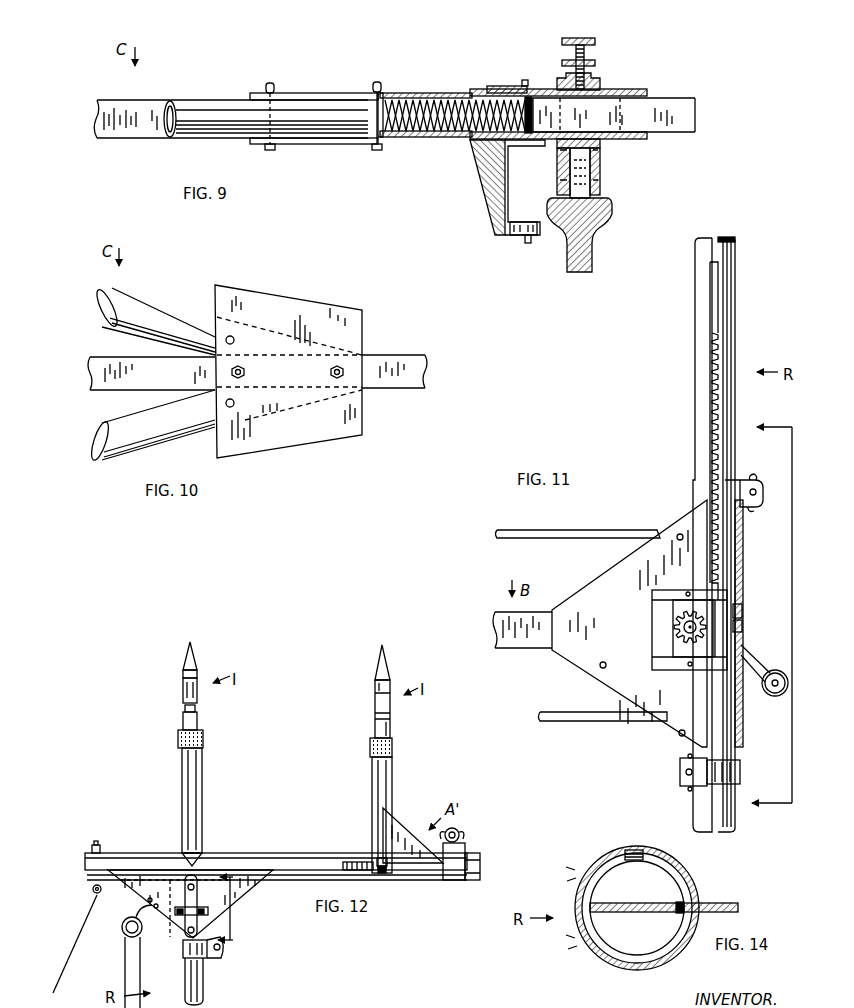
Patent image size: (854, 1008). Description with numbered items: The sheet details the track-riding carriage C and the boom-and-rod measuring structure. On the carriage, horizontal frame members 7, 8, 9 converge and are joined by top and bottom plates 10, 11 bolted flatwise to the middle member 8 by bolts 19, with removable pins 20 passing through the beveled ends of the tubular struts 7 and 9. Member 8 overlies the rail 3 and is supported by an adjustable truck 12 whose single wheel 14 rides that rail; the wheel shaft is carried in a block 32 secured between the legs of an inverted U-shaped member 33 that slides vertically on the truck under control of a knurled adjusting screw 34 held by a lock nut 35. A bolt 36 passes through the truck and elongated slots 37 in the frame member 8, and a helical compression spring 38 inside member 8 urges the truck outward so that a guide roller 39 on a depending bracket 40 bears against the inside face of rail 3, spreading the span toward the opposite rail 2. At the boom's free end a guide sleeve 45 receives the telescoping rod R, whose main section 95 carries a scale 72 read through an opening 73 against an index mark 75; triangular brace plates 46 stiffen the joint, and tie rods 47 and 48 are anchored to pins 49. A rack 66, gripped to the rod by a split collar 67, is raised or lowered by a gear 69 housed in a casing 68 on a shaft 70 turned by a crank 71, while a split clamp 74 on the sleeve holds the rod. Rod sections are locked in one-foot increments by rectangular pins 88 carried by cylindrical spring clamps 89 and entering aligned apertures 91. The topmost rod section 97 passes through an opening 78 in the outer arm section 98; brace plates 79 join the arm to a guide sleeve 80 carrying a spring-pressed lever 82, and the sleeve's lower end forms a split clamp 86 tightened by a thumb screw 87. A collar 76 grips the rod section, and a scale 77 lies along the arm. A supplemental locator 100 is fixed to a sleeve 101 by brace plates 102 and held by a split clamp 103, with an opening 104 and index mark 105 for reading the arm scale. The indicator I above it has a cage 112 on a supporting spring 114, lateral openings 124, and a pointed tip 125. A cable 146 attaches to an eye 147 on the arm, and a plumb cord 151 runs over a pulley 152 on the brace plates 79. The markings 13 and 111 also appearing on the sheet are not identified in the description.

In FIG. 11, the rail 2 is at (780, 617).
In FIG. 9, the rail 3 is at (613, 219).
In FIG. 9, the frame member 7 is at (228, 124).
In FIG. 10, the frame member 7 is at (102, 422).
In FIG. 9, the middle frame member 8 is at (130, 133).
In FIG. 10, the middle frame member 8 is at (95, 370).
In FIG. 10, the frame member 9 is at (105, 306).
In FIG. 9, the attaching plate 10 is at (298, 97).
In FIG. 10, the attaching plate 10 is at (345, 296).
In FIG. 9, the attaching plate 11 is at (340, 144).
In FIG. 9, the adjustable truck 12 is at (625, 89).
In FIG. 12, the section line 13- 13 is at (223, 913).
In FIG. 9, the wheel 14 is at (590, 195).
In FIG. 9, the bolt 19 is at (379, 88).
In FIG. 10, the bolt 19 is at (343, 372).
In FIG. 9, the removable pin 20 is at (267, 84).
In FIG. 10, the removable pin 20 is at (278, 289).
In FIG. 9, the block 32 is at (602, 162).
In FIG. 9, the inverted U-shaped member 33 is at (600, 81).
In FIG. 9, the knurled head adjusting screw 34 is at (562, 43).
In FIG. 9, the knurled lock nut 35 is at (594, 60).
In FIG. 9, the bolt 36 is at (526, 83).
In FIG. 9, the elongated slot 37 is at (502, 86).
In FIG. 9, the helical coil compression spring 38 is at (423, 138).
In FIG. 9, the guide roller 39 is at (527, 244).
In FIG. 9, the bracket 40 is at (483, 182).
In FIG. 11, the guide sleeve 45 is at (745, 556).
In FIG. 11, the triangular brace plate 46 is at (632, 687).
In FIG. 11, the top tie rod 47 is at (580, 530).
In FIG. 11, the bottom tie rod 48 is at (565, 722).
In FIG. 11, the pin 49 is at (678, 534).
In FIG. 11, the rack 66 is at (722, 290).
In FIG. 11, the split clamping collar 67 is at (742, 774).
In FIG. 11, the casing 68 is at (668, 600).
In FIG. 11, the gear 69 is at (677, 625).
In FIG. 11, the shaft 70 is at (684, 630).
In FIG. 11, the crank 71 is at (755, 665).
In FIG. 14, the scale 72 is at (630, 850).
In FIG. 11, the opening 73 is at (743, 611).
In FIG. 11, the split clamp 74 is at (735, 480).
In FIG. 11, the index mark 75 is at (743, 626).
In FIG. 12, the tapered screw type collar 76 is at (204, 736).
In FIG. 12, the scale 77 is at (356, 862).
In FIG. 12, the through opening 78 is at (183, 852).
In FIG. 12, the triangular brace plate 79 is at (250, 898).
In FIG. 12, the tubular guide sleeve 80 is at (170, 938).
In FIG. 12, the spring pressed lever 82 is at (198, 884).
In FIG. 12, the split clamp 86 is at (210, 958).
In FIG. 12, the thumb screw 87 is at (224, 948).
In FIG. 14, the locking pin 88 is at (608, 902).
In FIG. 14, the spring clamp 89 is at (695, 884).
In FIG. 14, the aperture 91 is at (676, 911).
In FIG. 11, the main tubular section 95 is at (694, 418).
In FIG. 12, the topmost tubular section 97 is at (203, 786).
In FIG. 12, the outermost tube section 98 is at (308, 847).
In FIG. 12, the supplemental vertical rod element 100 is at (393, 757).
In FIG. 12, the sleeve 101 is at (387, 875).
In FIG. 12, the triangular brace plate 102 is at (398, 822).
In FIG. 12, the split clamp 103 is at (466, 834).
In FIG. 12, the opening 104 is at (440, 873).
In FIG. 12, the index mark 105 is at (390, 868).
In FIG. 12, the stylus section 111 is at (183, 722).
In FIG. 12, the indicator cage 112 is at (183, 692).
In FIG. 12, the cage supporting spring 114 is at (196, 708).
In FIG. 12, the lateral opening 124 is at (183, 674).
In FIG. 12, the pointed tip 125 is at (191, 642).
In FIG. 12, the flexible cable 146 is at (90, 908).
In FIG. 12, the eye 147 is at (93, 889).
In FIG. 12, the flexible cord 151 is at (124, 968).
In FIG. 12, the sheave or pulley 152 is at (124, 932).